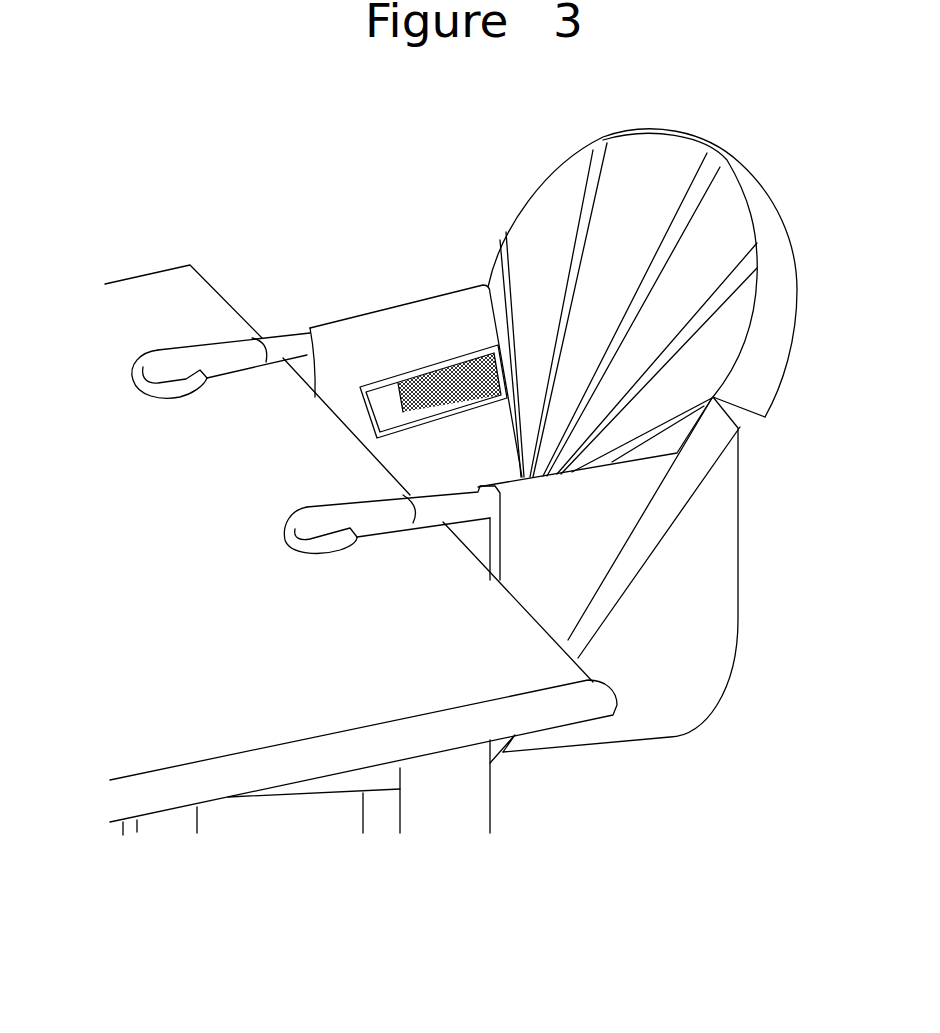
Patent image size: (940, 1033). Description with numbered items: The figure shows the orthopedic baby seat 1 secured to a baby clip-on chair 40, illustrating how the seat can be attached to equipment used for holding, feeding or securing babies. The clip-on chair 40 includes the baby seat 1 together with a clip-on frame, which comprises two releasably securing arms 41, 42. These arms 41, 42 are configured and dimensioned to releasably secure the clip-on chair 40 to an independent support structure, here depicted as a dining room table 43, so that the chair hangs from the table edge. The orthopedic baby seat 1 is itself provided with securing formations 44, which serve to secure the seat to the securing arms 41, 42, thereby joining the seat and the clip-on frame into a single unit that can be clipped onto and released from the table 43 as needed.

The baby seat 1 is at (793, 327).
The clip-on chair 40 is at (785, 120).
The releasably securing arm 41 is at (283, 348).
The releasably securing arm 42 is at (443, 522).
The dining room table 43 is at (198, 695).
The securing formations 44 is at (572, 541).